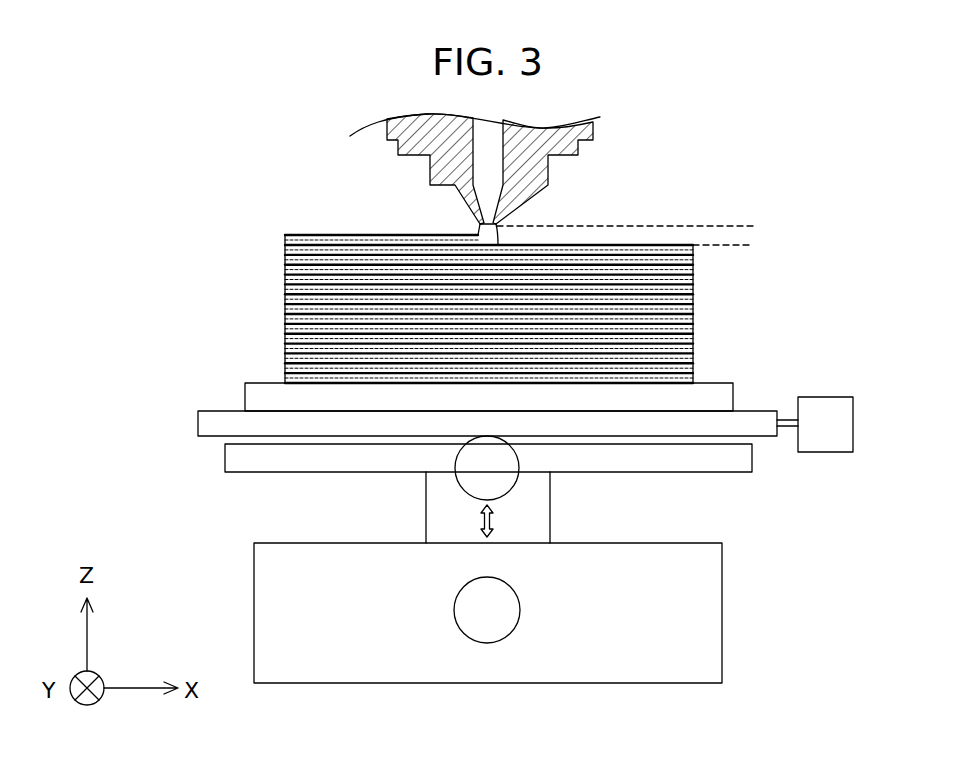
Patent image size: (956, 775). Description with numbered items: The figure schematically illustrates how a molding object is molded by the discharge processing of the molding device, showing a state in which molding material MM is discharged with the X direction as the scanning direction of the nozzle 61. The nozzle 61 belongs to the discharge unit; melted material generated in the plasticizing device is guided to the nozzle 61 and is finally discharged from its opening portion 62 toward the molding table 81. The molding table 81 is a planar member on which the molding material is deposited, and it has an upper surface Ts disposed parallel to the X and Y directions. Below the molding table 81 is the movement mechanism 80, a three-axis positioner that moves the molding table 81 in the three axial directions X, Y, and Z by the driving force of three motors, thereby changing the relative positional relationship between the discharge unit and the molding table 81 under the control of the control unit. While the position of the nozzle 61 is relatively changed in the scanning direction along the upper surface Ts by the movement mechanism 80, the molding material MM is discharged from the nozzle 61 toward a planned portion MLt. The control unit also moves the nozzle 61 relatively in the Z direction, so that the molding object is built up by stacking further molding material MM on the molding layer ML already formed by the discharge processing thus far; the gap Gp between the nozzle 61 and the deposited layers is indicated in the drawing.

The nozzle 61 is at (408, 178).
The opening portion 62 is at (480, 223).
The movement mechanism 80 is at (770, 535).
The molding table 81 is at (712, 398).
The molding material MM is at (497, 160).
The molding layer ML is at (285, 307).
The planned portion MLt is at (622, 247).
The upper surface Ts is at (702, 375).
The gap between nozzle and layer Gp is at (736, 255).